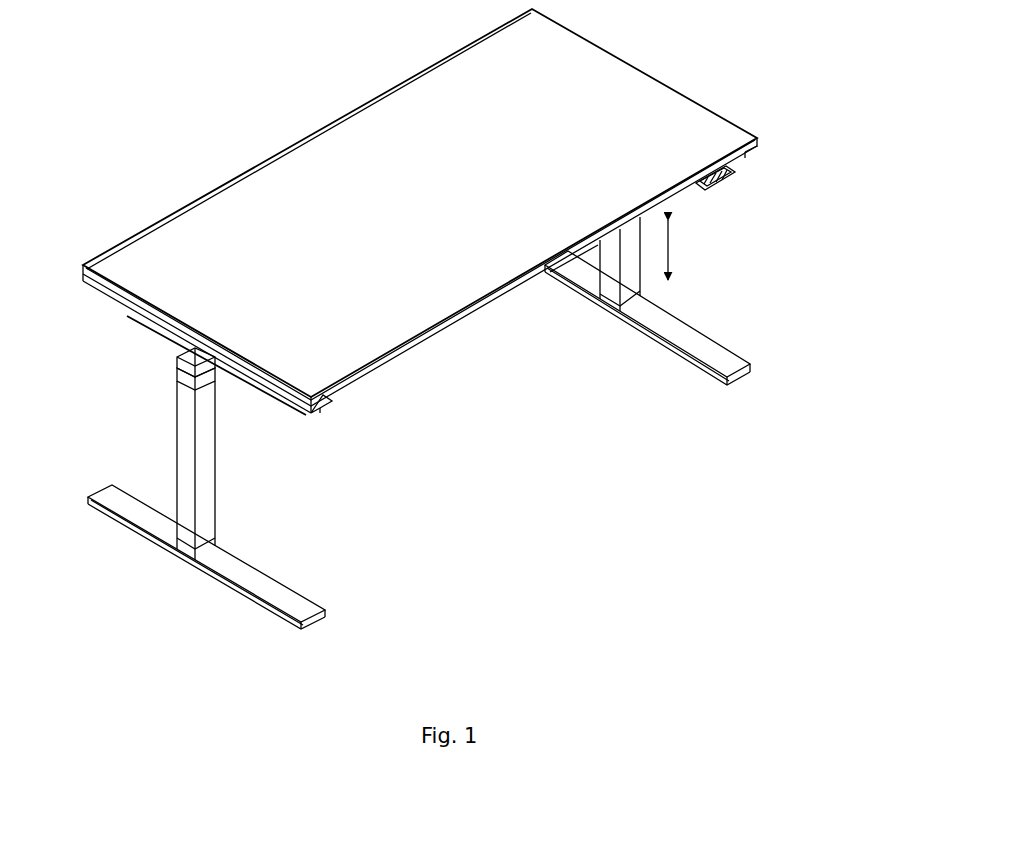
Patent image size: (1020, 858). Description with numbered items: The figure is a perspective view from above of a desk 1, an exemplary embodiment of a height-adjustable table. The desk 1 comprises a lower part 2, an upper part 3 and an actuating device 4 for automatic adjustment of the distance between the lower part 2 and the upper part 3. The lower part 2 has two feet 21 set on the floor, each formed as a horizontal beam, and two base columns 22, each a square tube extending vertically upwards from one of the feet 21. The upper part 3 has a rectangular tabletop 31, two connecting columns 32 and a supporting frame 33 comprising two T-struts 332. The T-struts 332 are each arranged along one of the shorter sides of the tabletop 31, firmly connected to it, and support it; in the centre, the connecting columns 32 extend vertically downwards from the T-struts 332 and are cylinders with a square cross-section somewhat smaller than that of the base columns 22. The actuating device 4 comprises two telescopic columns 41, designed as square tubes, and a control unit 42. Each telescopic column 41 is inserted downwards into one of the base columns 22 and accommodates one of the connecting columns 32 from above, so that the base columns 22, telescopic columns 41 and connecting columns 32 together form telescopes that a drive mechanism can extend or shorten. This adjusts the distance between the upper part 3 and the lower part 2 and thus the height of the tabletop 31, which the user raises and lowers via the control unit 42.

The desk 1 is at (158, 190).
The lower part 2 is at (690, 394).
The feet 21 is at (730, 365).
The base columns 22 is at (187, 510).
The upper part 3 is at (115, 324).
The tabletop 31 is at (420, 206).
The connecting columns 32 is at (187, 355).
The supporting frame 33 is at (273, 412).
The T-struts 332 is at (322, 408).
The actuating device 4 is at (715, 198).
The telescopic columns 41 is at (187, 373).
The control unit 42 is at (723, 177).